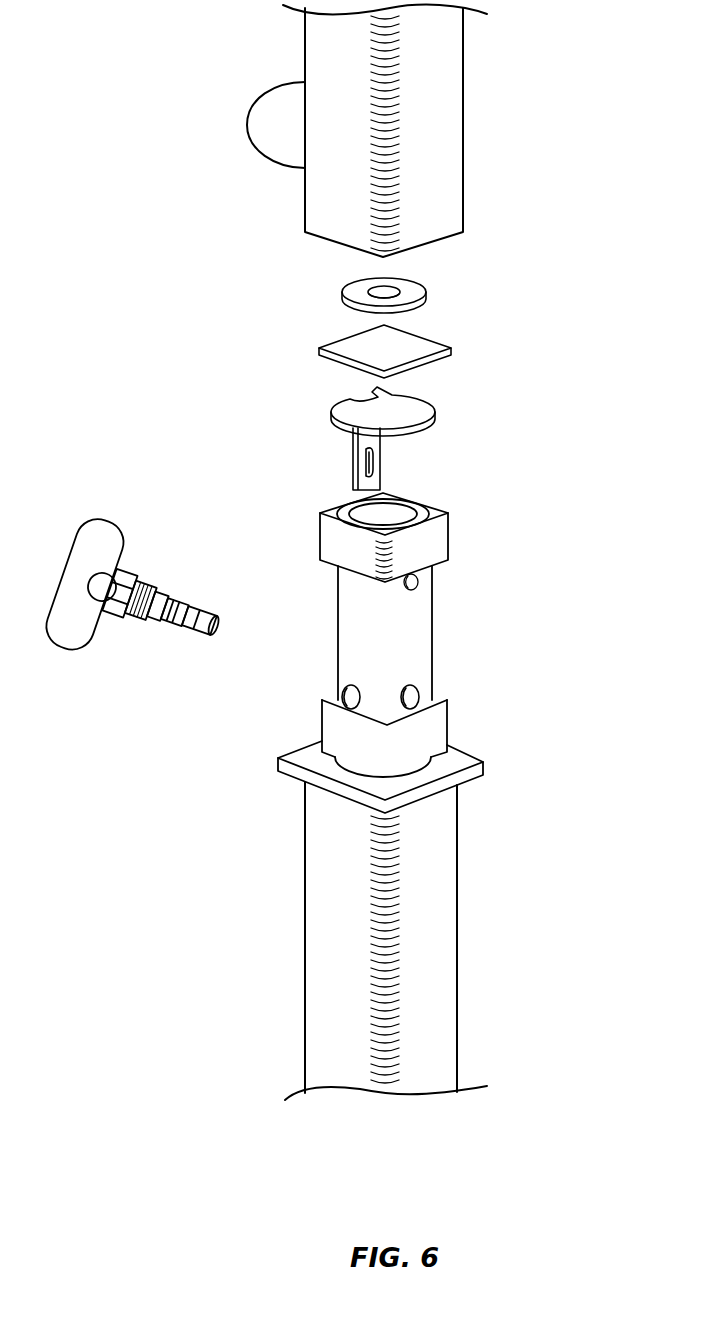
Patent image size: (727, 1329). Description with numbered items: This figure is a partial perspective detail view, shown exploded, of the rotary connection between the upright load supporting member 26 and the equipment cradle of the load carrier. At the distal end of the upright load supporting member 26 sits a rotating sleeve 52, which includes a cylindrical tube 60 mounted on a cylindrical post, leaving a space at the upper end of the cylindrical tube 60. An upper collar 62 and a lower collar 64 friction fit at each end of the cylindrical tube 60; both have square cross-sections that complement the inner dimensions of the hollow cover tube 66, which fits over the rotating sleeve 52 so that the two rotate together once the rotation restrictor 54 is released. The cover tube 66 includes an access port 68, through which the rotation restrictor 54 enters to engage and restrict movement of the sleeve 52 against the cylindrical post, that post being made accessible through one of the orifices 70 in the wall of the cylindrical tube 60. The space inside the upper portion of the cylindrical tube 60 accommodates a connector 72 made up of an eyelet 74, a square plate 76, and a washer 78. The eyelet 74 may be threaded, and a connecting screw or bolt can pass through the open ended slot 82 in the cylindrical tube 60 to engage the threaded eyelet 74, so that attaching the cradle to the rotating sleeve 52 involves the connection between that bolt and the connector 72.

The upright load supporting member 26 is at (430, 925).
The rotating sleeve 52 is at (410, 653).
The rotation restrictor 54 is at (152, 583).
The cylindrical tube 60 is at (418, 658).
The upper collar 62 is at (438, 540).
The lower collar 64 is at (427, 748).
The cover tube 66 is at (453, 115).
The access port 68 is at (262, 113).
The orifices 70 is at (318, 703).
The connector 72 is at (416, 361).
The eyelet 74 is at (418, 408).
The square plate 76 is at (353, 350).
The washer 78 is at (347, 290).
The open ended slot 82 is at (433, 585).